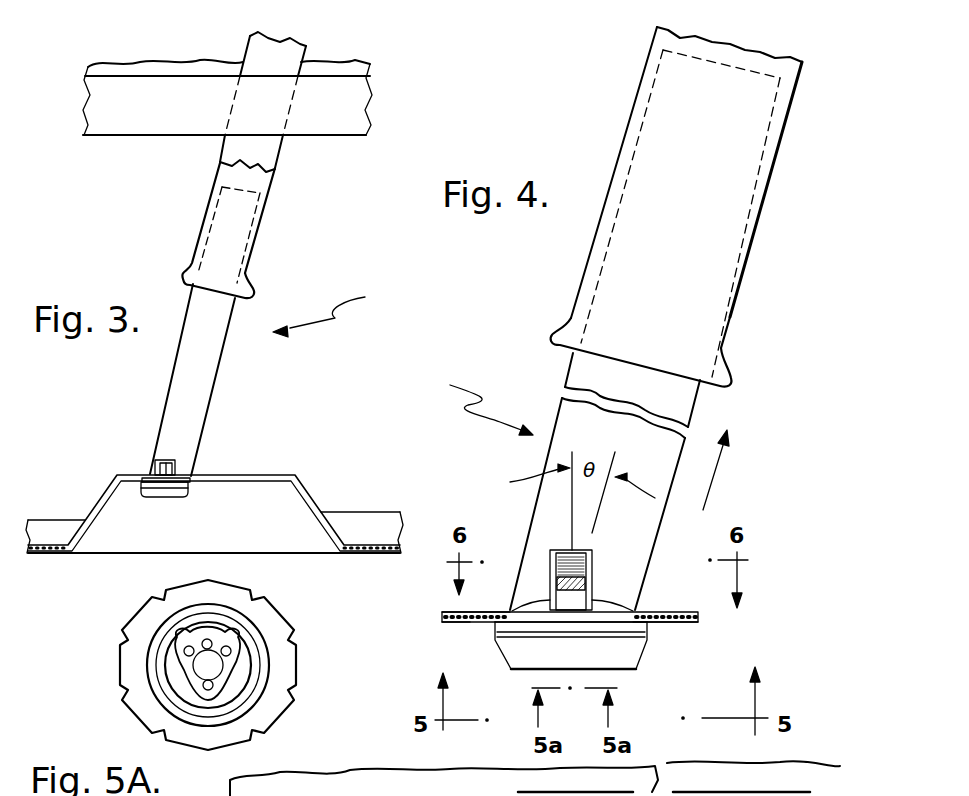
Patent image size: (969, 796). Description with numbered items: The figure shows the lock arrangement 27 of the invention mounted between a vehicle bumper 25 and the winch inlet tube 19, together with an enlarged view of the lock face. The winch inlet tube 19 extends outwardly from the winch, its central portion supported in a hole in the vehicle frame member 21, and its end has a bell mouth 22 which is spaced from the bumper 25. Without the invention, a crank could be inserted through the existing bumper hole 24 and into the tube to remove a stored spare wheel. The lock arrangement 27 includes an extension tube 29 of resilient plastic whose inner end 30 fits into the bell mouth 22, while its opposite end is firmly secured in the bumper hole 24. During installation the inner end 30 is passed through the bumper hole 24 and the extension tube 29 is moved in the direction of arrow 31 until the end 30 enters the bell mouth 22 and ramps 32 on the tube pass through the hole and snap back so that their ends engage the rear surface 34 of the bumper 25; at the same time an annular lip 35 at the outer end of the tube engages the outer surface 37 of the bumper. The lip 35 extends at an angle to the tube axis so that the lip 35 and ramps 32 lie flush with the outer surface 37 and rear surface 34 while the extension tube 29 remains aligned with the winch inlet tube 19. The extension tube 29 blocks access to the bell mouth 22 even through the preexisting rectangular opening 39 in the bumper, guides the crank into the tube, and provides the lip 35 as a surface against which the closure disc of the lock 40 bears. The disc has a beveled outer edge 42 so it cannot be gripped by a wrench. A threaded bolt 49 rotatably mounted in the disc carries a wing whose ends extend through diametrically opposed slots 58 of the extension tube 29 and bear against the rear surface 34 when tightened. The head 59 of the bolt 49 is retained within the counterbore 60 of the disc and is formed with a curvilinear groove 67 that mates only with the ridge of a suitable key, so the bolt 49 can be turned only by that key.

In FIG. 3, the winch inlet tube 19 is at (222, 160).
In FIG. 4, the winch inlet tube 19 is at (641, 78).
In FIG. 3, the vehicle frame member 21 is at (157, 63).
In FIG. 3, the bell mouth 22 is at (183, 270).
In FIG. 4, the bell mouth 22 is at (730, 360).
In FIG. 3, the bumper hole 24 is at (197, 478).
In FIG. 4, the bumper hole 24 is at (647, 647).
In FIG. 3, the bumper 25 is at (48, 556).
In FIG. 4, the bumper 25 is at (442, 625).
In FIG. 5A, the bumper 25 is at (352, 780).
In FIG. 3, the lock arrangement 27 is at (334, 311).
In FIG. 4, the lock arrangement 27 is at (476, 405).
In FIG. 3, the extension tube 29 is at (172, 368).
In FIG. 4, the extension tube 29 is at (571, 362).
In FIG. 3, the inner end of extension tube 30 is at (258, 212).
In FIG. 4, the inner end of extension tube 30 is at (766, 181).
In FIG. 4, the direction of insertion arrow 31 is at (710, 487).
In FIG. 4, the ramps 32 is at (528, 600).
In FIG. 4, the rear surface of bumper 34 is at (447, 612).
In FIG. 4, the annular lip 35 is at (647, 625).
In FIG. 4, the outer surface of bumper 37 is at (450, 627).
In FIG. 3, the rectangular opening 39 is at (265, 476).
In FIG. 3, the lock 40 is at (172, 497).
In FIG. 4, the lock 40 is at (640, 663).
In FIG. 5A, the lock 40 is at (133, 675).
In FIG. 4, the beveled outer edge 42 is at (497, 653).
In FIG. 5A, the threaded bolt 49 is at (147, 650).
In FIG. 3, the diametrically opposed slots 58 is at (153, 470).
In FIG. 4, the diametrically opposed slots 58 is at (592, 562).
In FIG. 5A, the bolt head 59 is at (250, 647).
In FIG. 5A, the counterbore 60 is at (173, 617).
In FIG. 5A, the curvilinear groove 67 is at (187, 680).